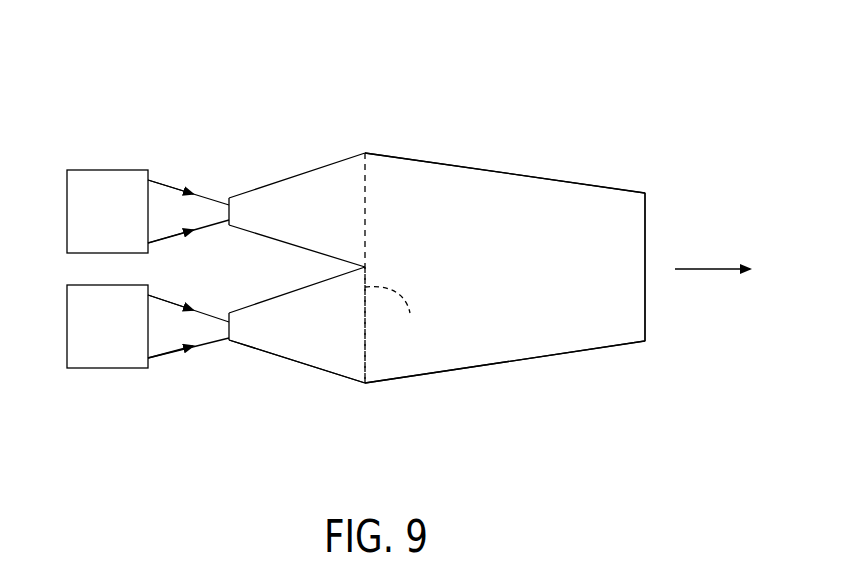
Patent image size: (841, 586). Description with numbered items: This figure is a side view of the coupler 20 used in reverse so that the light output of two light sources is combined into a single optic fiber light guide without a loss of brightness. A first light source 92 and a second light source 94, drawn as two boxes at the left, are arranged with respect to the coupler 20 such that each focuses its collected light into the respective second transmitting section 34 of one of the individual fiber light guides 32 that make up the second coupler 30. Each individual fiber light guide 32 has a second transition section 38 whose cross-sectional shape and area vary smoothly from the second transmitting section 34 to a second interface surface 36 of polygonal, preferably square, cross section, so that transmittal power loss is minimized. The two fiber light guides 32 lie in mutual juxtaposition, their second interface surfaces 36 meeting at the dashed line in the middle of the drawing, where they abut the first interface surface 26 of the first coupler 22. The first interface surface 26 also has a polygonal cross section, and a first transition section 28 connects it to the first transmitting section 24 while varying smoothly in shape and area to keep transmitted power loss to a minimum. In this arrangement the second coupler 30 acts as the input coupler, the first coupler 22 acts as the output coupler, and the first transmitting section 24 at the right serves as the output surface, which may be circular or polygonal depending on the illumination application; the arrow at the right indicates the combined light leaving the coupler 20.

The coupler 20 is at (460, 115).
The first coupler 22 is at (550, 320).
The first transmitting section 24 is at (645, 255).
The first interface surface 26 is at (362, 338).
The first transition section 28 is at (527, 175).
The second coupler 30 is at (331, 148).
The individual single fiber light guide 32 is at (277, 205).
The second transmitting section 34 is at (227, 205).
The second interface surface 36 is at (392, 314).
The second transition section 38 is at (310, 365).
The first light source 92 is at (107, 343).
The second light source 94 is at (105, 190).